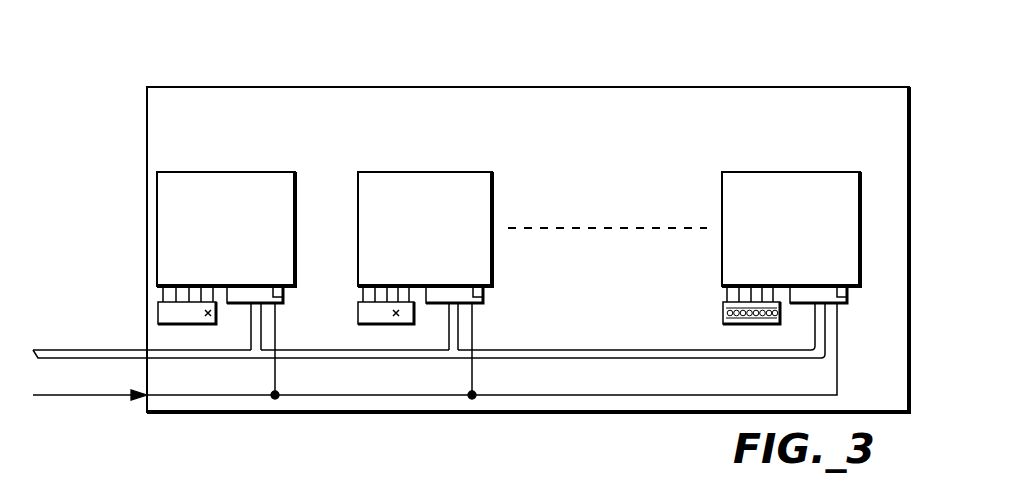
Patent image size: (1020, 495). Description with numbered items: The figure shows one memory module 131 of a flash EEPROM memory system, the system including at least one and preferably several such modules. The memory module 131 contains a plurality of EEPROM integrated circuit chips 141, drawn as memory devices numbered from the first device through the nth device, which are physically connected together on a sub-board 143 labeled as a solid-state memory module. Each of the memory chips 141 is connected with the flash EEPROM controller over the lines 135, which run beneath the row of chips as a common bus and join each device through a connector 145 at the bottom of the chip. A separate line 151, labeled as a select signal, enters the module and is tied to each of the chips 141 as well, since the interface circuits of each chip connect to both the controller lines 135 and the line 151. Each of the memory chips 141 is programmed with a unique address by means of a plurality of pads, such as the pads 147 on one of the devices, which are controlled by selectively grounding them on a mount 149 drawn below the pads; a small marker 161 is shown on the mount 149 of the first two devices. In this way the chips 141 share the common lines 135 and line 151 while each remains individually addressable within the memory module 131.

The memory module 131 is at (733, 68).
The sub-board 143 is at (788, 92).
The EEPROM integrated circuit chip 141 is at (231, 178).
The pads 147 is at (162, 296).
The mount 149 is at (158, 312).
The pin marker 161 is at (206, 318).
The device bus connector 145 is at (283, 300).
The lines 135 is at (96, 350).
The line 151 is at (108, 399).